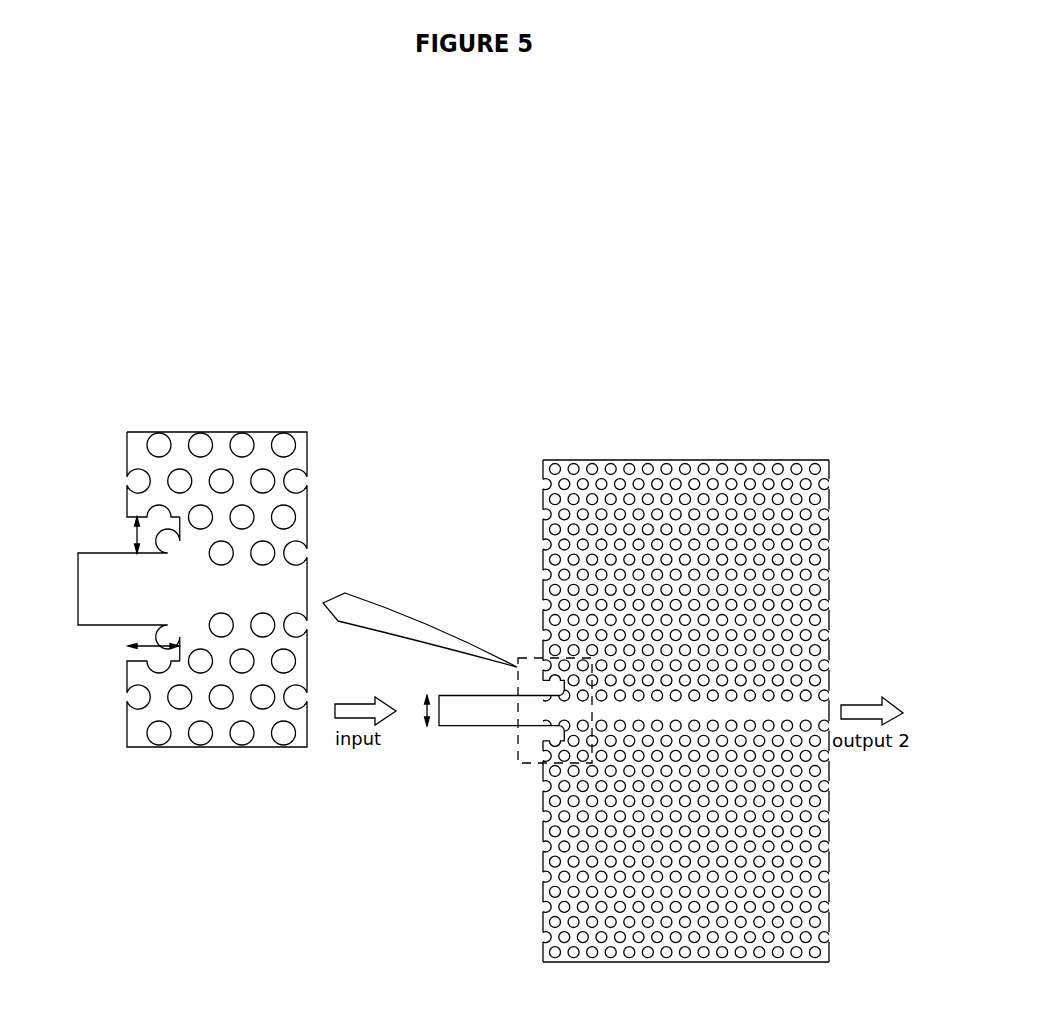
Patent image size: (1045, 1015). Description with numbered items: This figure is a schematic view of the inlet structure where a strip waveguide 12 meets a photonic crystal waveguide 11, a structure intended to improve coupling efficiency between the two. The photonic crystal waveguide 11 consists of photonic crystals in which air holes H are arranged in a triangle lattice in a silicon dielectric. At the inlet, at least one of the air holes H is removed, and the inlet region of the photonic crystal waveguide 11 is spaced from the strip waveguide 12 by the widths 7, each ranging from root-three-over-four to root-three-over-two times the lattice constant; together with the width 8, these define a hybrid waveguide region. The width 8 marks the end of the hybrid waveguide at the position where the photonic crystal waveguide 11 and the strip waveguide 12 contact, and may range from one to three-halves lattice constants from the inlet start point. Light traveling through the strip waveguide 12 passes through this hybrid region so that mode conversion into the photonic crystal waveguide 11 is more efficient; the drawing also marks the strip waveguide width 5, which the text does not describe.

The air hole H is at (281, 443).
The photonic crystal waveguide 11 is at (290, 503).
The width 7 is at (135, 533).
The strip waveguide 12 is at (95, 590).
The width 8 is at (152, 643).
The waveguide width 5 is at (424, 706).